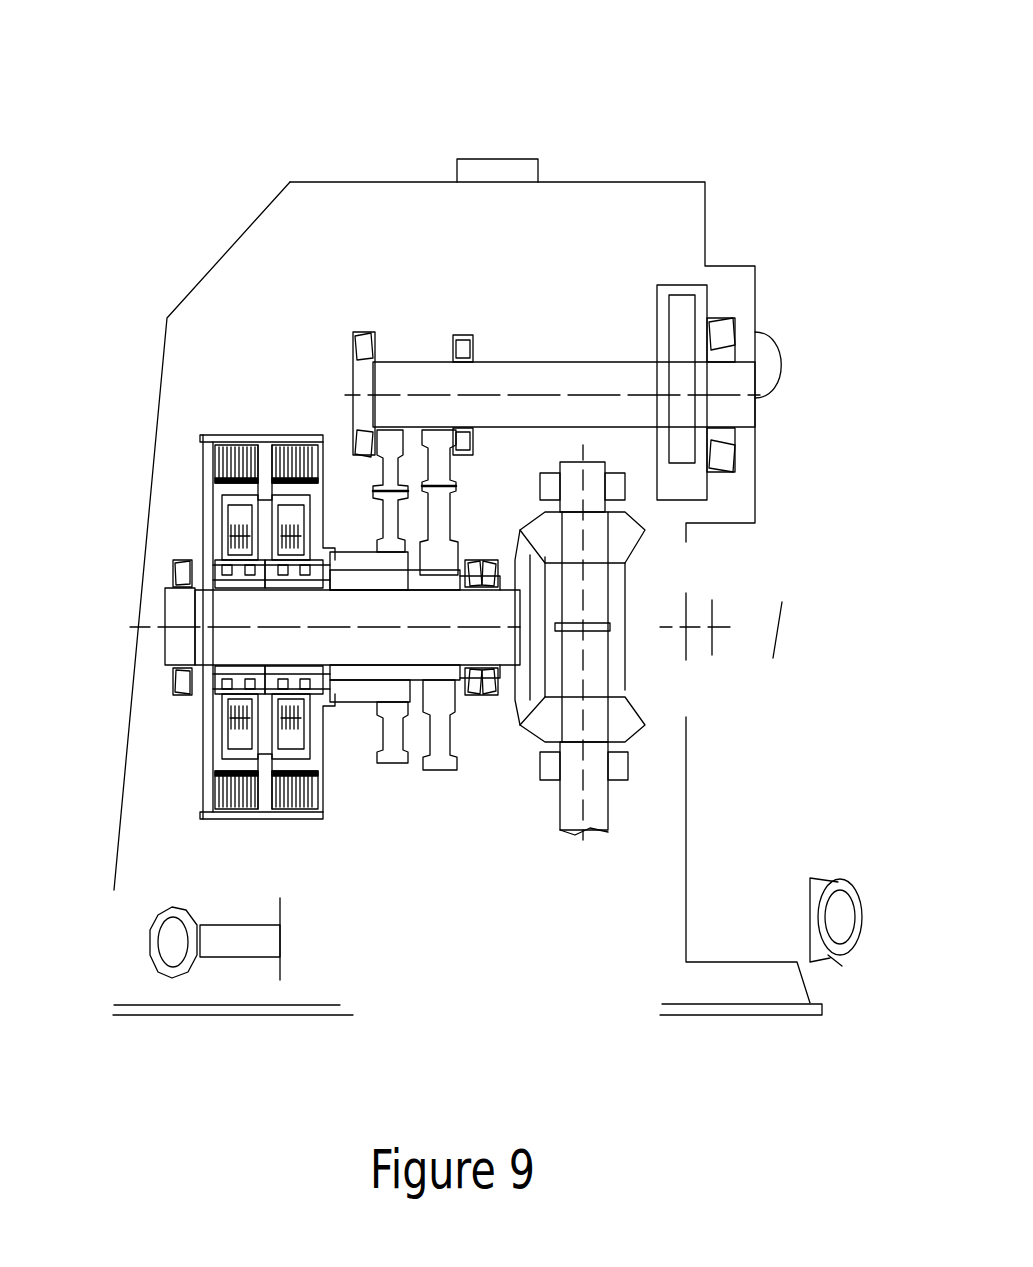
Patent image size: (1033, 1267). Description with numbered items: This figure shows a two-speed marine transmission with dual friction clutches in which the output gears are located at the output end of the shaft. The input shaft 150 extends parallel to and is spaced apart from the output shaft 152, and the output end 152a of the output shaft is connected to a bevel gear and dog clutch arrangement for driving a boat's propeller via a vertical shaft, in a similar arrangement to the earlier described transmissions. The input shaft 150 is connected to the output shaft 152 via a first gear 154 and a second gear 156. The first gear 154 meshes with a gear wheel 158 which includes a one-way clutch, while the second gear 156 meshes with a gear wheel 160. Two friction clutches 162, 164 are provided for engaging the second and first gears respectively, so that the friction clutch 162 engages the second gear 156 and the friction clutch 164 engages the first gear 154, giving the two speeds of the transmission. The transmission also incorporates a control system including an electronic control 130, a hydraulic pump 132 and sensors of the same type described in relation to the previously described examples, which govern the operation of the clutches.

The electronic control 130 is at (500, 157).
The hydraulic pump 132 is at (687, 290).
The input shaft 150 is at (508, 360).
The output shaft 152 is at (463, 640).
The output end 152a is at (517, 628).
The first gear 154 is at (395, 765).
The second gear 156 is at (442, 773).
The gear wheel 158 is at (387, 343).
The gear wheel 160 is at (433, 300).
The friction clutch 162 is at (218, 787).
The friction clutch 164 is at (292, 797).